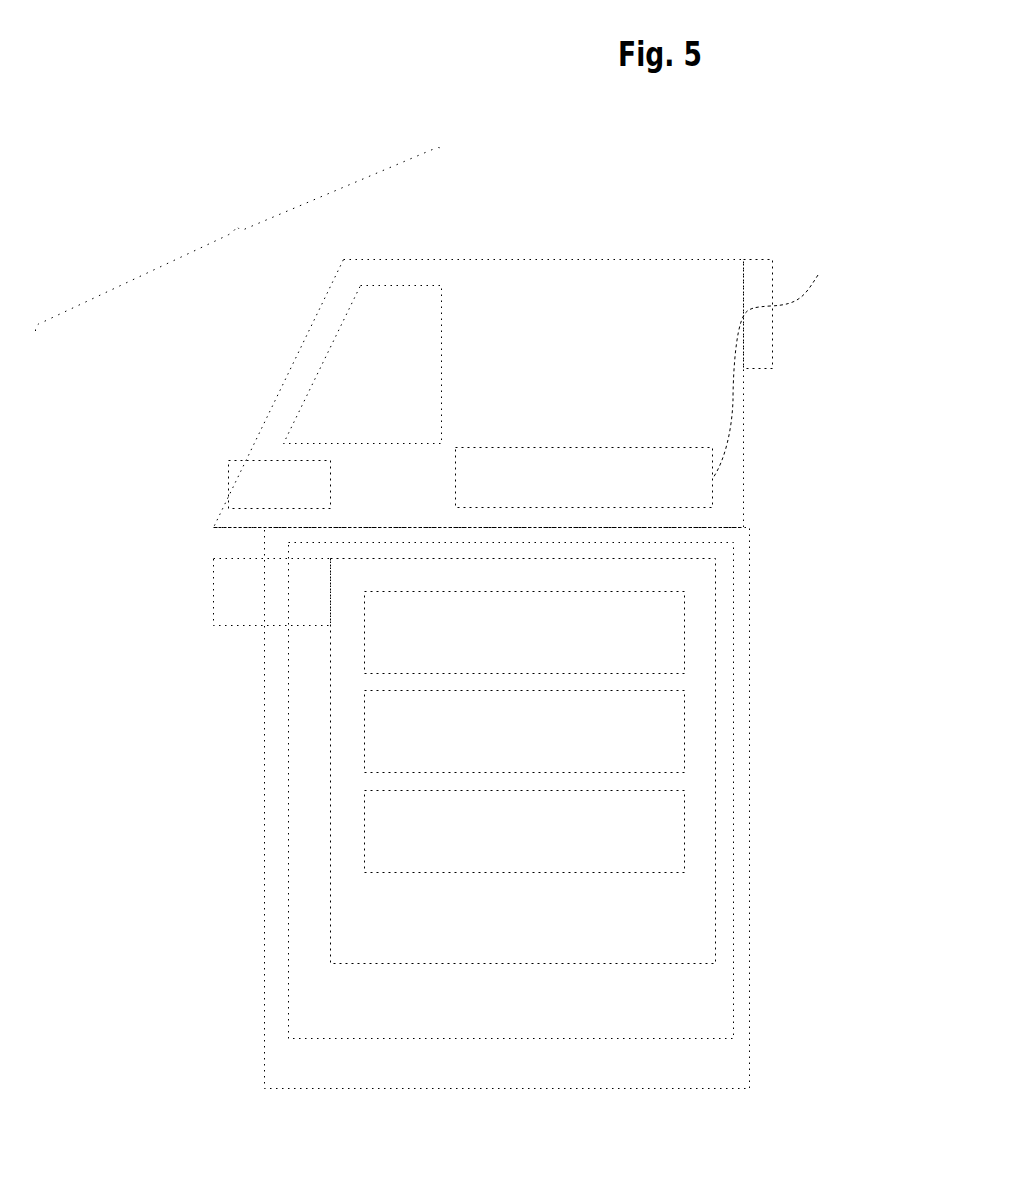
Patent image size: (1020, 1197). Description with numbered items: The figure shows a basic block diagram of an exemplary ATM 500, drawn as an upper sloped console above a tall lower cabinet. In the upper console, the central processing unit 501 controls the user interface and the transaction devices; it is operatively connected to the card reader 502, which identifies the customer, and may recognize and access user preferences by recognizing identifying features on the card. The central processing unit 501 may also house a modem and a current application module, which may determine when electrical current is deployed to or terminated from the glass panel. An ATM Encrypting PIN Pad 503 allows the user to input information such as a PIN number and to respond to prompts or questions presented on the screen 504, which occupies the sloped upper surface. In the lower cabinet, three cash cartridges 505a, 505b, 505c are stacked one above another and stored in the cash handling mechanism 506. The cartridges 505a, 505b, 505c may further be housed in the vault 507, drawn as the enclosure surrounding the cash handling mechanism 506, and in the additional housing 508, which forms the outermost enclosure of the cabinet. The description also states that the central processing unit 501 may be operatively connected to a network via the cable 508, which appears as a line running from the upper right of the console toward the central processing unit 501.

The ATM 500 is at (239, 240).
The central processing unit 501 is at (585, 448).
The card reader 502 is at (441, 309).
The ATM Encrypting PIN Pad 503 is at (330, 490).
The screen 504 is at (293, 362).
The cash cartridge 505a is at (684, 632).
The cash cartridge 505b is at (684, 731).
The cash cartridge 505c is at (684, 830).
The cash handling mechanism 506 is at (532, 944).
The vault 507 is at (308, 988).
The additional housing 508 is at (827, 308).